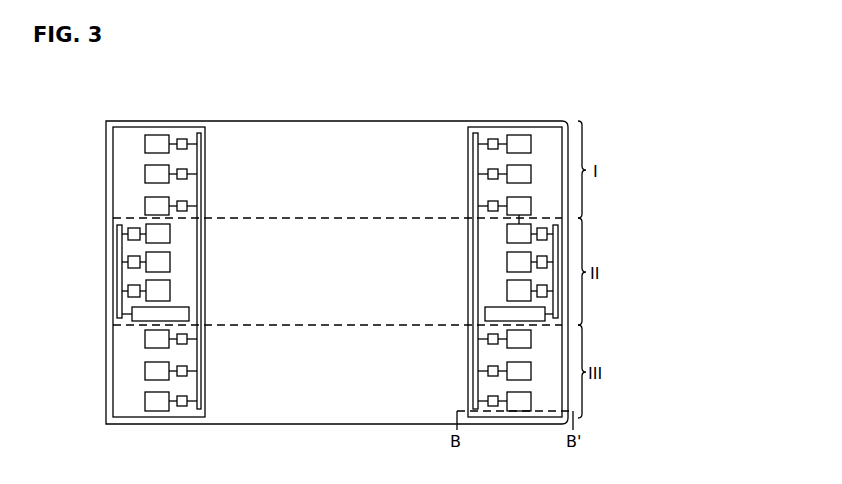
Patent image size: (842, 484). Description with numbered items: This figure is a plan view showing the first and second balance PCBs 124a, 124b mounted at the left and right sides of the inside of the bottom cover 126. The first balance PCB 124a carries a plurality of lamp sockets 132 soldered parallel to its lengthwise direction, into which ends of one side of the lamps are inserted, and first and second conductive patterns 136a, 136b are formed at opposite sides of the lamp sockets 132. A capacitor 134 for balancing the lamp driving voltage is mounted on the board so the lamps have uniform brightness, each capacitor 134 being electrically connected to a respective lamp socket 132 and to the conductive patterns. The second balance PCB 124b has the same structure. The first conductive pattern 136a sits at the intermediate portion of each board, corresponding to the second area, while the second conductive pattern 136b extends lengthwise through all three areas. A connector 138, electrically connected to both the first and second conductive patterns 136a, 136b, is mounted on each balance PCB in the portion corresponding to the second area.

The first balance PCB 124a is at (128, 127).
The second balance PCB 124b is at (517, 127).
The bottom cover 126 is at (360, 125).
The lamp socket 132 is at (147, 142).
The capacitor 134 is at (178, 138).
The first conductive pattern 136a is at (120, 258).
The second conductive pattern 136b is at (199, 133).
The connector 138 is at (134, 322).